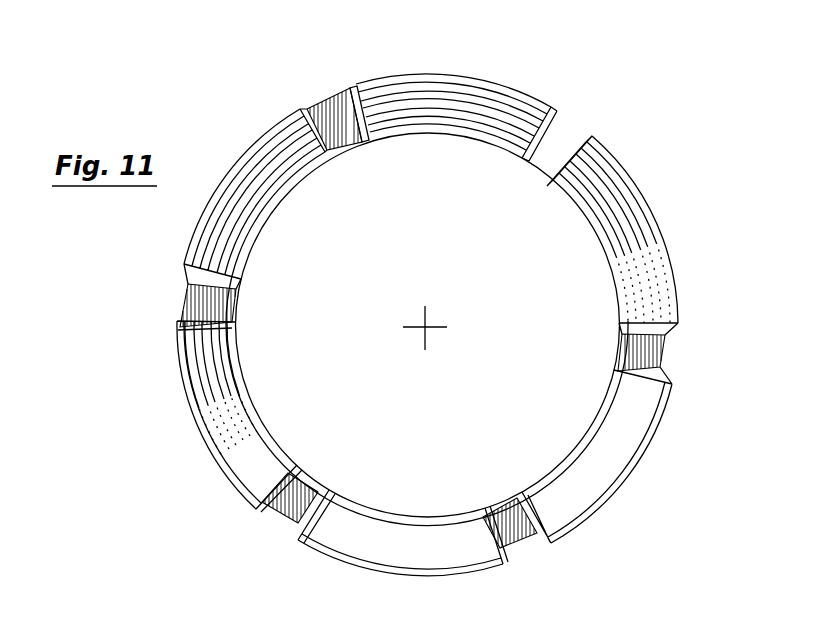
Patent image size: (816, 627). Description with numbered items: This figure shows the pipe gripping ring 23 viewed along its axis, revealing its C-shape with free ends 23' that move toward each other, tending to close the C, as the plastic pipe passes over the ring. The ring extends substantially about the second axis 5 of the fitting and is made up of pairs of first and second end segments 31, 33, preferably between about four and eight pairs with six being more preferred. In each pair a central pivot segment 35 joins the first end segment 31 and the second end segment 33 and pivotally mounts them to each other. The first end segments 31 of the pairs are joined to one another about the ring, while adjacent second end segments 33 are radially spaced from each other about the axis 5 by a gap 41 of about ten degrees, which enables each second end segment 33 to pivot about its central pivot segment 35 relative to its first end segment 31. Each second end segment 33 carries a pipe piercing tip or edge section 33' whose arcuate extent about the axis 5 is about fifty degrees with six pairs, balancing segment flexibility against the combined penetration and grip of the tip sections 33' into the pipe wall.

The second axis 5 is at (422, 325).
The pipe gripping ring 23 is at (375, 414).
The free ends 23' is at (612, 194).
The first end segment 31 is at (460, 142).
The second end segment 33 is at (445, 176).
The tip section 33' is at (533, 100).
The central pivot segment 35 is at (348, 150).
The gap 41 is at (330, 128).